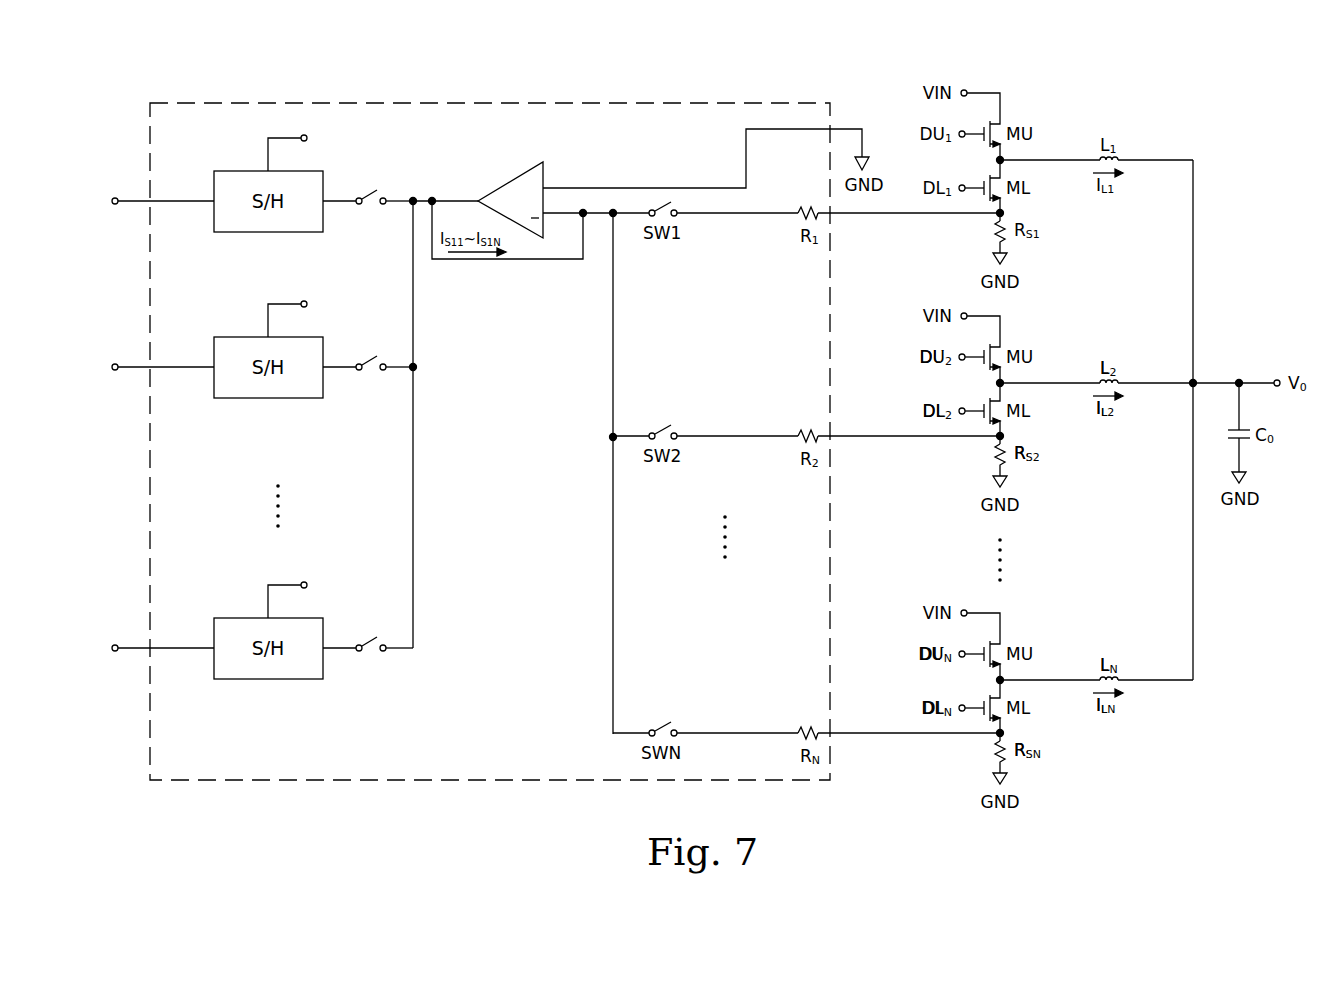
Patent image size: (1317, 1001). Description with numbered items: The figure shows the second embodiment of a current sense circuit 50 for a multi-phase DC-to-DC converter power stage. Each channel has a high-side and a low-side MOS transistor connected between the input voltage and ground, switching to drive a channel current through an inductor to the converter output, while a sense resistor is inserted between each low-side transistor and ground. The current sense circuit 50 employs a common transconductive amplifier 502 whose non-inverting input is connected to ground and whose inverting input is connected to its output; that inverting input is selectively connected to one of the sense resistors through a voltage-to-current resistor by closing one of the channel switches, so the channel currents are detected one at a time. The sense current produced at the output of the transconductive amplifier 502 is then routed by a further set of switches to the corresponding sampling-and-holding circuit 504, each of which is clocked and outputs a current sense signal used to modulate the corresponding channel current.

The current sense circuit 50 is at (510, 103).
The transconductive amplifier 502 is at (508, 178).
The sampling-and-holding circuit 504 is at (245, 232).